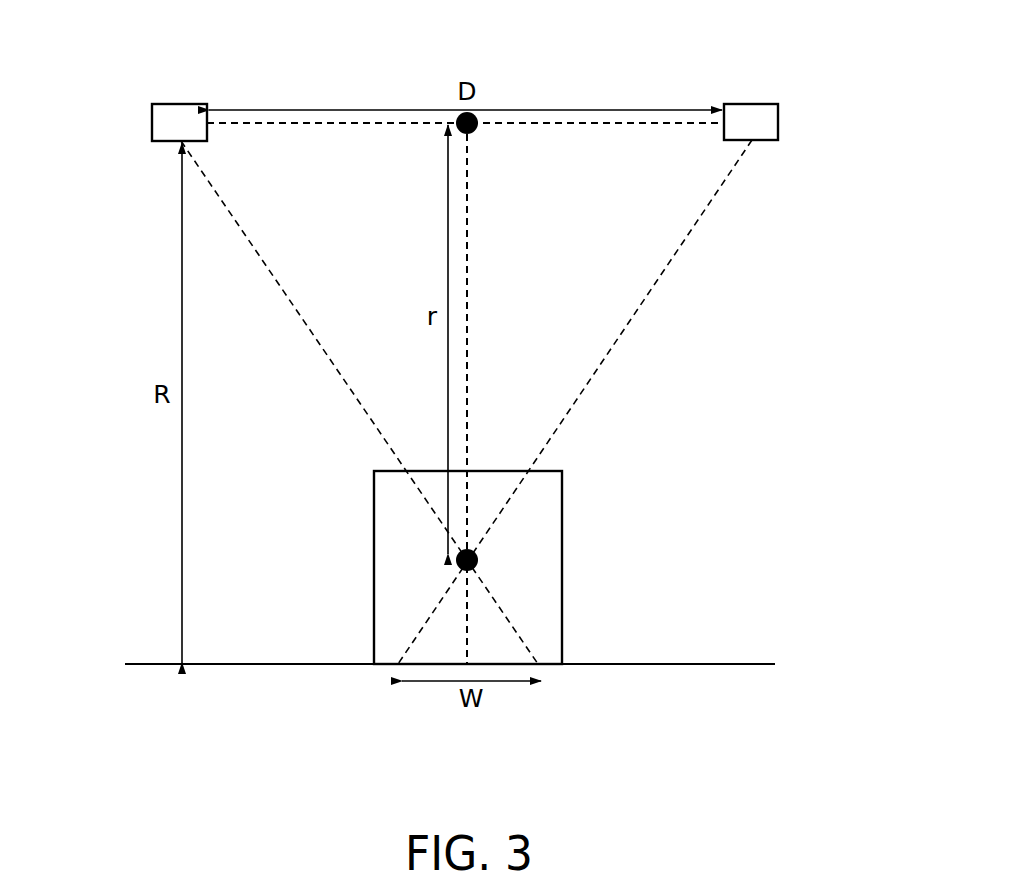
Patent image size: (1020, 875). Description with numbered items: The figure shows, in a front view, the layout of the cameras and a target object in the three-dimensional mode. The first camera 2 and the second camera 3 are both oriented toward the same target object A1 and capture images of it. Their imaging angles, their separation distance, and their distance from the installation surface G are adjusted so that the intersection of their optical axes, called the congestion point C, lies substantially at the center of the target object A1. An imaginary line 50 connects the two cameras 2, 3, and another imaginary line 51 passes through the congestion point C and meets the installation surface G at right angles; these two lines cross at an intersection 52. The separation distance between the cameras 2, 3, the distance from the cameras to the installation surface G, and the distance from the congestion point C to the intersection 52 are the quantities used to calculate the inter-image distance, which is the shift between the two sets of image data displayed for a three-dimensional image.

The first camera 2 is at (175, 104).
The second camera 3 is at (750, 104).
The imaginary line connecting the two cameras 50 is at (316, 124).
The imaginary line passing through the congestion point 51 is at (468, 196).
The intersection 52 is at (476, 128).
The target object A1 is at (562, 512).
The congestion point C is at (478, 559).
The installation surface G is at (712, 663).